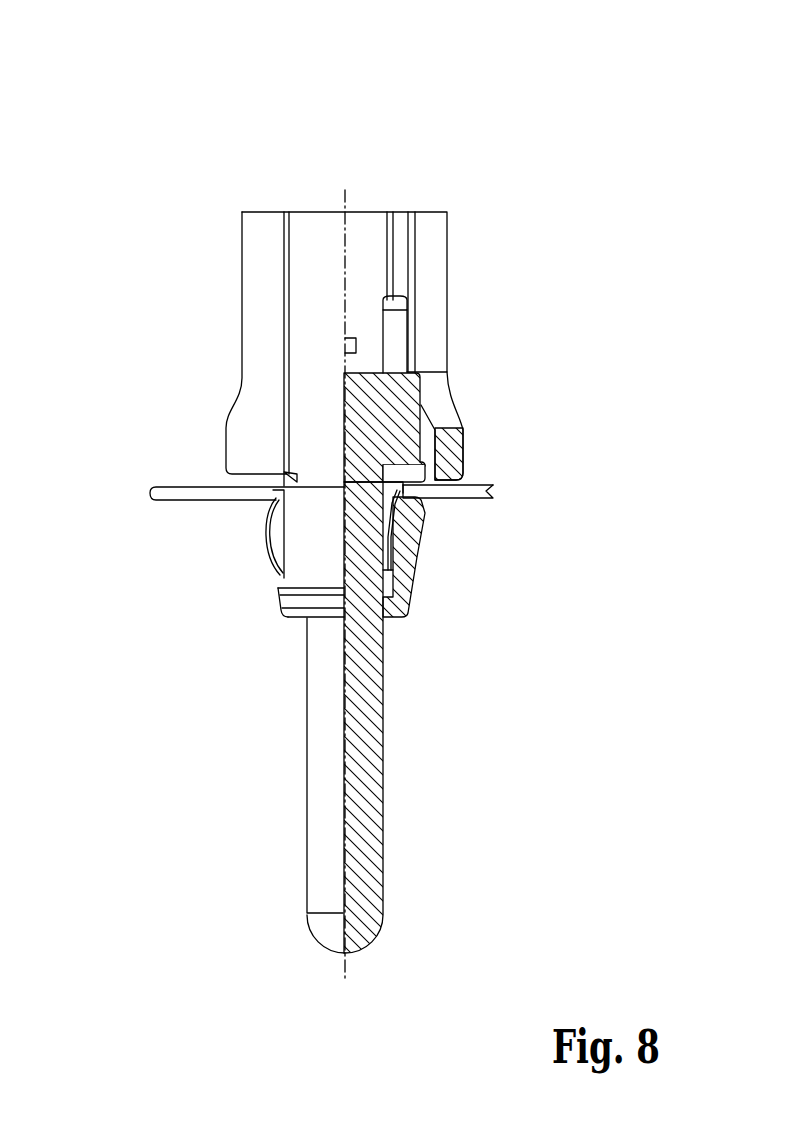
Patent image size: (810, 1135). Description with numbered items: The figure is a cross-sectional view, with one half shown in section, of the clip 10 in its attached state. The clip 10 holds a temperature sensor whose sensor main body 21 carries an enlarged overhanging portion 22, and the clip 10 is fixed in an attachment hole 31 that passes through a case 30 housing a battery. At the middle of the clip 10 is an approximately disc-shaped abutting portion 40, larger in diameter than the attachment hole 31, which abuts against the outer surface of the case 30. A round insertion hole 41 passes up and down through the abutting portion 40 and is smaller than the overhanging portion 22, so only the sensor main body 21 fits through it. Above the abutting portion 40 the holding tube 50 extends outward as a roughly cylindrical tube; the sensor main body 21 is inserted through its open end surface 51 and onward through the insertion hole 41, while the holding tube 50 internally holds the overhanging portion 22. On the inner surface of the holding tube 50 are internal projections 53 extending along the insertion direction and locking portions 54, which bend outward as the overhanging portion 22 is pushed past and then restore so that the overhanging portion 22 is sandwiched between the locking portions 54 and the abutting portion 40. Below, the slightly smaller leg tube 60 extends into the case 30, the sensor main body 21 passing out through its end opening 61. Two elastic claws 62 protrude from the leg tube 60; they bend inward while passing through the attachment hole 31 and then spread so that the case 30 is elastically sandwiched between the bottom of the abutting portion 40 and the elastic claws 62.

The clip 10 is at (95, 92).
The sensor main body 21 is at (375, 882).
The overhanging portion 22 is at (408, 402).
The case 30 is at (165, 500).
The attachment hole 31 is at (420, 493).
The abutting portion 40 is at (460, 455).
The insertion hole 41 is at (345, 483).
The holding tube 50 is at (305, 265).
The open end surface 51 is at (365, 228).
The internal projections 53 is at (395, 300).
The locking portions 54 is at (335, 360).
The leg tube 60 is at (318, 567).
The end opening 61 is at (384, 619).
The elastic claws 62 is at (275, 532).